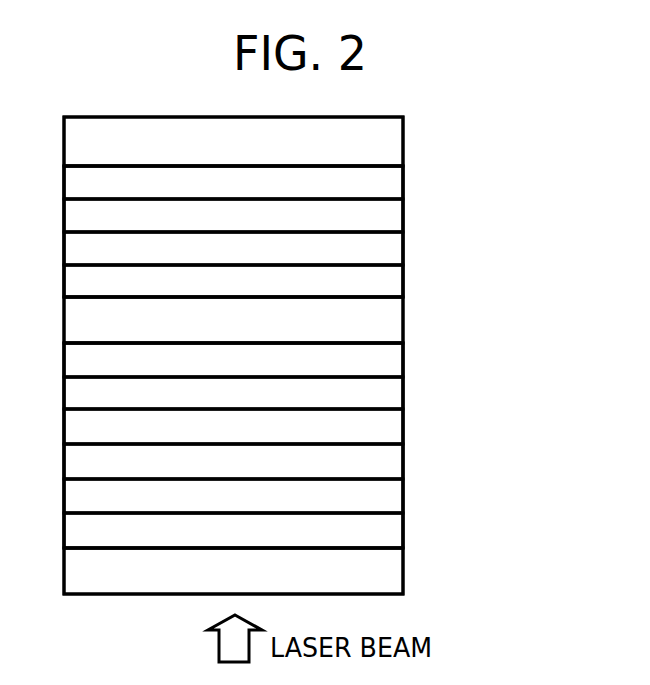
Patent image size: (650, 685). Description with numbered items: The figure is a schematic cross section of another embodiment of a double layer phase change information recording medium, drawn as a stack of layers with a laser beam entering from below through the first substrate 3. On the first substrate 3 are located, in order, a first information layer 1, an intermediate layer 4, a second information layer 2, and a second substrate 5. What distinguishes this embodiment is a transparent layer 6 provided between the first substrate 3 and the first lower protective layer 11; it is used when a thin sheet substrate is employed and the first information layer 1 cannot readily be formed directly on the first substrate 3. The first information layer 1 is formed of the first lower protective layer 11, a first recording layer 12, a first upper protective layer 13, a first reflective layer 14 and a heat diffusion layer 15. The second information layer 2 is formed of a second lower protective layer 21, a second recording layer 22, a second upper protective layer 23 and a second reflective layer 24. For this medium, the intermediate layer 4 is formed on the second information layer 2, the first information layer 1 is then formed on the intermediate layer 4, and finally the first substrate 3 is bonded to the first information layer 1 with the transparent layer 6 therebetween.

The first information layer 1 is at (485, 347).
The second information layer 2 is at (485, 167).
The first substrate 3 is at (390, 576).
The intermediate layer 4 is at (390, 325).
The second substrate 5 is at (390, 148).
The transparent layer 6 is at (390, 533).
The first lower protective layer 11 is at (390, 496).
The first recording layer 12 is at (390, 462).
The first upper protective layer 13 is at (390, 428).
The first reflective layer 14 is at (390, 395).
The heat diffusion layer 15 is at (390, 363).
The second lower protective layer 21 is at (390, 285).
The second recording layer 22 is at (390, 253).
The second upper protective layer 23 is at (390, 220).
The second reflective layer 24 is at (390, 188).